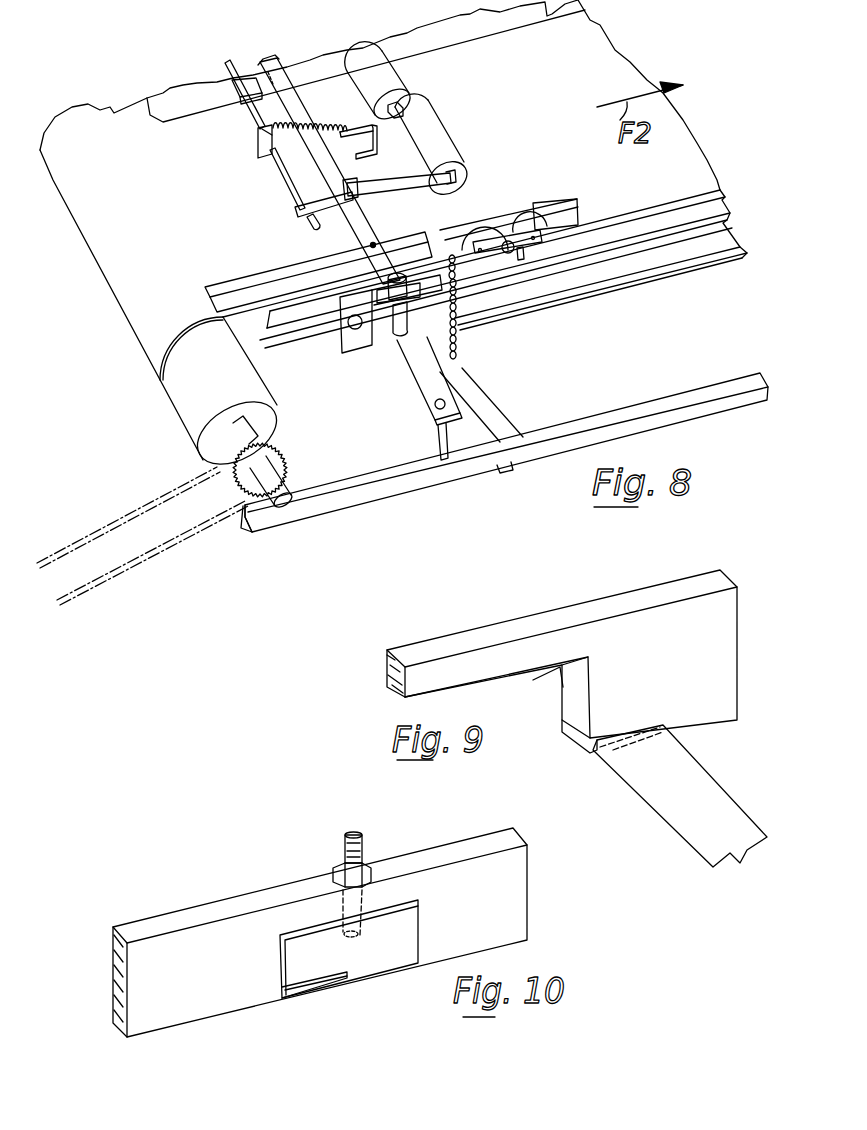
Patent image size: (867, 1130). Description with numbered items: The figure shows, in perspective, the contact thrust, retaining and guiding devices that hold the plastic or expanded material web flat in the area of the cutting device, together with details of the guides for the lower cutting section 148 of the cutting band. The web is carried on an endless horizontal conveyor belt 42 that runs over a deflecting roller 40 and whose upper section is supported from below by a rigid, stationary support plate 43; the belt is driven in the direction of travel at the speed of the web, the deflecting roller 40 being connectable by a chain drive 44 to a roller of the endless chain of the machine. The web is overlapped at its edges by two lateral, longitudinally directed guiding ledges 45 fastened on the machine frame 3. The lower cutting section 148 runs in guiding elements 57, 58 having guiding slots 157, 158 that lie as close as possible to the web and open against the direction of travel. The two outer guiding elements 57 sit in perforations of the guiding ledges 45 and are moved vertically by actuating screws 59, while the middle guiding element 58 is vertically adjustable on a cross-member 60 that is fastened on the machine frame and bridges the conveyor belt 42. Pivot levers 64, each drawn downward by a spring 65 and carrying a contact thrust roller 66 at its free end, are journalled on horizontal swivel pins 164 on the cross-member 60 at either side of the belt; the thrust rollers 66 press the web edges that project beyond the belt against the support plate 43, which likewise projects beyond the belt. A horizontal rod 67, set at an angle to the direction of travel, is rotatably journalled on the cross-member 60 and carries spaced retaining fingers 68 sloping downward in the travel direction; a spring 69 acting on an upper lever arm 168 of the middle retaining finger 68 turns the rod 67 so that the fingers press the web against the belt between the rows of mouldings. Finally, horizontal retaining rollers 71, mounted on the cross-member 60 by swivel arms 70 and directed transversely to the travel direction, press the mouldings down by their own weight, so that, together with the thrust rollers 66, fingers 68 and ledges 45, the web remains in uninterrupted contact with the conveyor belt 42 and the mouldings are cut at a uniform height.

In FIG. 8, the machine frame 3 is at (556, 460).
In FIG. 8, the deflecting roller 40 is at (182, 390).
In FIG. 8, the conveyor belt 42 is at (612, 54).
In FIG. 8, the support plate 43 is at (653, 240).
In FIG. 8, the chain drive 44 is at (188, 548).
In FIG. 8, the guiding ledges 45 is at (205, 296).
In FIG. 10, the guiding ledges 45 is at (515, 910).
In FIG. 10, the outer guiding element 57 is at (380, 968).
In FIG. 8, the middle guiding element 58 is at (380, 138).
In FIG. 9, the middle guiding element 58 is at (642, 625).
In FIG. 10, the actuating screw 59 is at (345, 858).
In FIG. 8, the cross-member 60 is at (284, 92).
In FIG. 8, the pivot lever 64 is at (490, 264).
In FIG. 8, the spring 65 is at (460, 332).
In FIG. 8, the contact thrust roller 66 is at (535, 224).
In FIG. 8, the horizontal rod 67 is at (265, 125).
In FIG. 8, the retaining finger 68 is at (252, 82).
In FIG. 8, the spring 69 is at (276, 162).
In FIG. 8, the swivel arm 70 is at (413, 188).
In FIG. 8, the retaining roller 71 is at (392, 78).
In FIG. 9, the lower cutting section 148 is at (715, 800).
In FIG. 10, the guiding slot 157 is at (312, 998).
In FIG. 9, the guiding slot 158 is at (598, 768).
In FIG. 8, the swivel pin 164 is at (366, 330).
In FIG. 8, the upper lever arm 168 is at (259, 144).